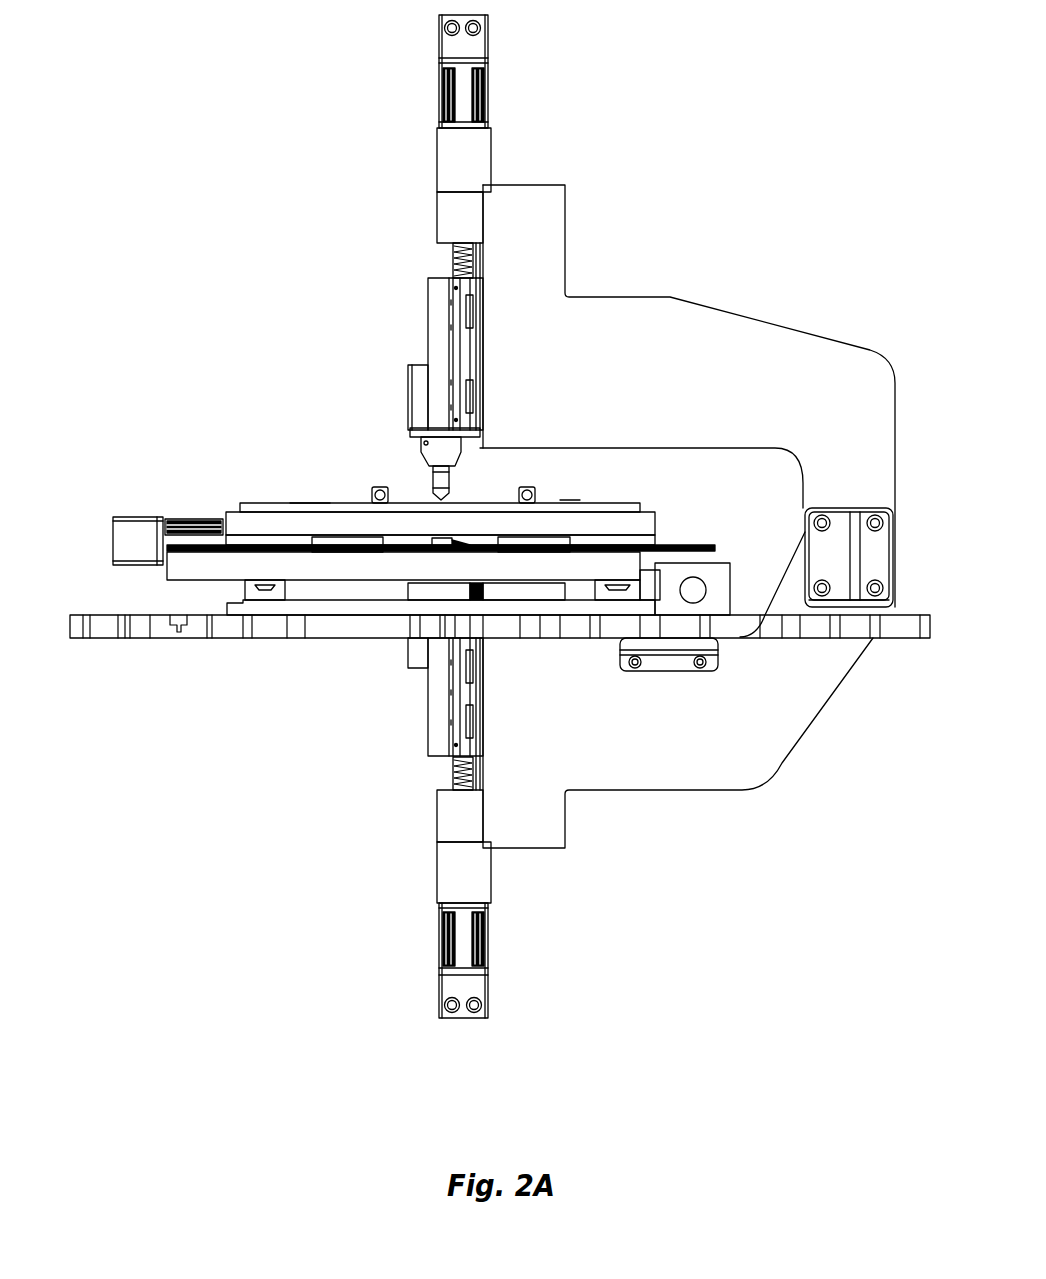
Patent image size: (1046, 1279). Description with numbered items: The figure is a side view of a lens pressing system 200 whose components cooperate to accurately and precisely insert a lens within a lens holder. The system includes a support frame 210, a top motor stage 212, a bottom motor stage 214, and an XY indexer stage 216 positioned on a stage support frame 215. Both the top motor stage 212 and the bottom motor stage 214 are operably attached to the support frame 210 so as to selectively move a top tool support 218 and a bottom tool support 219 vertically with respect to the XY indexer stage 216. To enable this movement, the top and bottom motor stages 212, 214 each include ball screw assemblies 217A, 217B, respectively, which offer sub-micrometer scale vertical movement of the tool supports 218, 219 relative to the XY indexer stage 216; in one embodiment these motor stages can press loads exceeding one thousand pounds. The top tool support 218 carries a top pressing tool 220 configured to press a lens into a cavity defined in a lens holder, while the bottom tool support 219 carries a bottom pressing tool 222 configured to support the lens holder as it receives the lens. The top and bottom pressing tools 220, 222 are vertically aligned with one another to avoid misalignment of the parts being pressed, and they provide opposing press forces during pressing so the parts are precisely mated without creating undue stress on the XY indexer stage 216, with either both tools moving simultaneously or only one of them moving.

The lens pressing system 200 is at (766, 124).
The support frame 210 is at (815, 356).
The top motor stage 212 is at (427, 90).
The bottom motor stage 214 is at (508, 962).
The stage support frame 215 is at (139, 631).
The XY indexer stage 216 is at (236, 505).
The ball screw assembly 217A is at (446, 262).
The ball screw assembly 217B is at (446, 770).
The top tool support 218 is at (430, 393).
The bottom tool support 219 is at (433, 687).
The top pressing tool 220 is at (464, 479).
The bottom pressing tool 222 is at (472, 548).